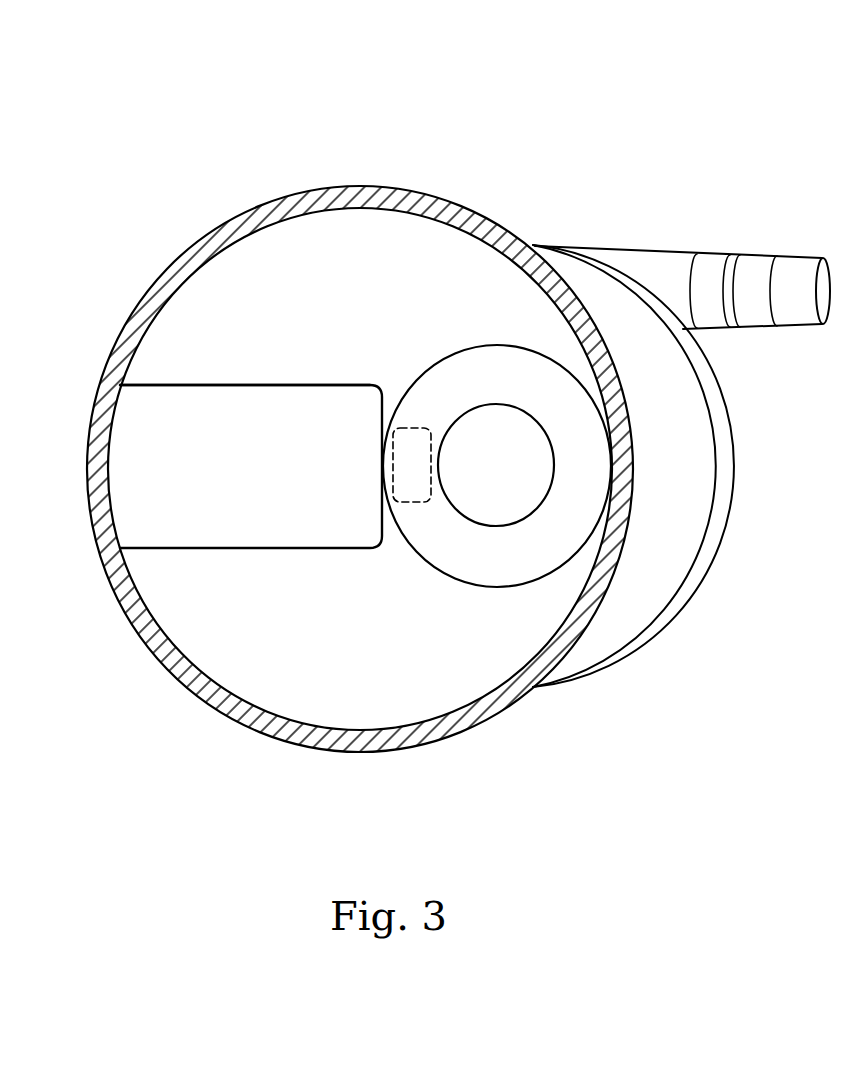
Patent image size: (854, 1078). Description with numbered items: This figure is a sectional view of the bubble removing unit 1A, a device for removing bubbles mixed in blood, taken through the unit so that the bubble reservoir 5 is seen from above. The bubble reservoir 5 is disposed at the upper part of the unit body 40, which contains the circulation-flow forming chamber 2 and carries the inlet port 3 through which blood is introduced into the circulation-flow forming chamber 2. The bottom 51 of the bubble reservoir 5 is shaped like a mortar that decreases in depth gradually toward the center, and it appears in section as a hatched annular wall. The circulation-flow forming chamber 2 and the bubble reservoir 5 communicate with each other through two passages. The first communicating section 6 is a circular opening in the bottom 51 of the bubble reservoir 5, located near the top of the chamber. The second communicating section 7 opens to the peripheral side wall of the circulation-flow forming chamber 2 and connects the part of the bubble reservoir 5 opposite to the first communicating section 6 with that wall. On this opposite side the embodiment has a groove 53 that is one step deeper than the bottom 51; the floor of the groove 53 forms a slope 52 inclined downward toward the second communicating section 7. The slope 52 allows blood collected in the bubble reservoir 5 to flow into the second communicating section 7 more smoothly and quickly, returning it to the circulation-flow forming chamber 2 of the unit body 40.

The bubble removing unit 1A is at (440, 120).
The circulation-flow forming chamber 2 is at (684, 531).
The inlet port 3 is at (758, 285).
The unit body 40 is at (746, 499).
The bubble reservoir 5 is at (235, 287).
The bottom 51 is at (340, 297).
The slope 52 is at (223, 492).
The groove 53 is at (203, 427).
The first communicating section 6 is at (491, 437).
The second communicating section 7 is at (408, 503).